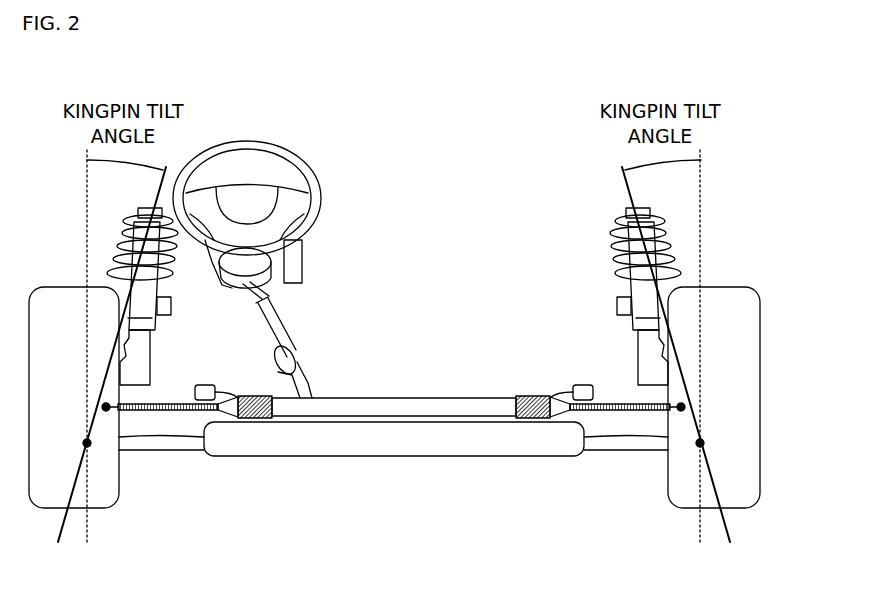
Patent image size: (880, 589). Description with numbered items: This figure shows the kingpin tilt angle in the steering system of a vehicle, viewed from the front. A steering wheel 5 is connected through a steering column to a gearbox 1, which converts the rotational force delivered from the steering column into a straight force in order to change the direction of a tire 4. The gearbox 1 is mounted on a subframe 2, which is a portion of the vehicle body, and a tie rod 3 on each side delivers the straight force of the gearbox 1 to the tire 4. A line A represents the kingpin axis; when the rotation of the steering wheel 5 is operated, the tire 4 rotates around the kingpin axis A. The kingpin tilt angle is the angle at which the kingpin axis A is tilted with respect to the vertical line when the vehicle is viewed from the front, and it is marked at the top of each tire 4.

The gearbox 1 is at (384, 398).
The subframe 2 is at (485, 443).
The tie rod 3 is at (620, 403).
The tire 4 is at (724, 298).
The steering wheel 5 is at (272, 147).
The kingpin axis A is at (627, 180).